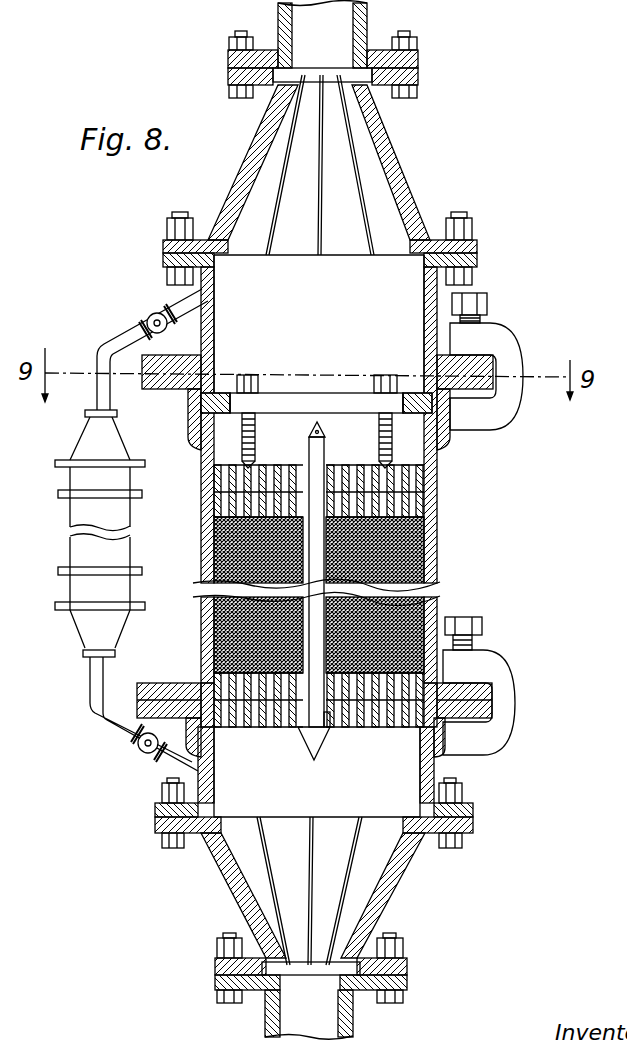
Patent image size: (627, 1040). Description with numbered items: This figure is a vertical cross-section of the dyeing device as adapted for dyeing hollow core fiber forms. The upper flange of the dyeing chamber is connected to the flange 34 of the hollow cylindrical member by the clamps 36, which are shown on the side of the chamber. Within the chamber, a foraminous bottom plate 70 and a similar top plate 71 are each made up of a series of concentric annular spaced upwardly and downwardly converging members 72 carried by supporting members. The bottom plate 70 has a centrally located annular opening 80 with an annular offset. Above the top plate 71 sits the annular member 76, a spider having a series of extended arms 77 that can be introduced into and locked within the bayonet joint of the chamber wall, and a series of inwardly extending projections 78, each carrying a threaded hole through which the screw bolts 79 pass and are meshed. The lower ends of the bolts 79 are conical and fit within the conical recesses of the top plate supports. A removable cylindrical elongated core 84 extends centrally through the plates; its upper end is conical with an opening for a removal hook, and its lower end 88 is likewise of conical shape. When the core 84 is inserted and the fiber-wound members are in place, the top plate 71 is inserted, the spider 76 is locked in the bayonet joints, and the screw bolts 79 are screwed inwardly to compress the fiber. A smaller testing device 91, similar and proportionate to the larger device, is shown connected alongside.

The flange 34 is at (484, 305).
The clamps 36 is at (495, 417).
The bottom plate 70 is at (382, 728).
The top plate 71 is at (362, 466).
The concentric annular spaced upwardly and downwardly converging members 72 is at (287, 466).
The annular member 76 is at (221, 396).
The extended arms 77 is at (195, 412).
The inwardly extending projections 78 is at (262, 402).
The screw bolts 79 is at (381, 436).
The annular opening 80 is at (318, 732).
The removable cylindrical elongated core 84 is at (318, 450).
The lower end 88 is at (317, 747).
The testing device 91 is at (90, 544).